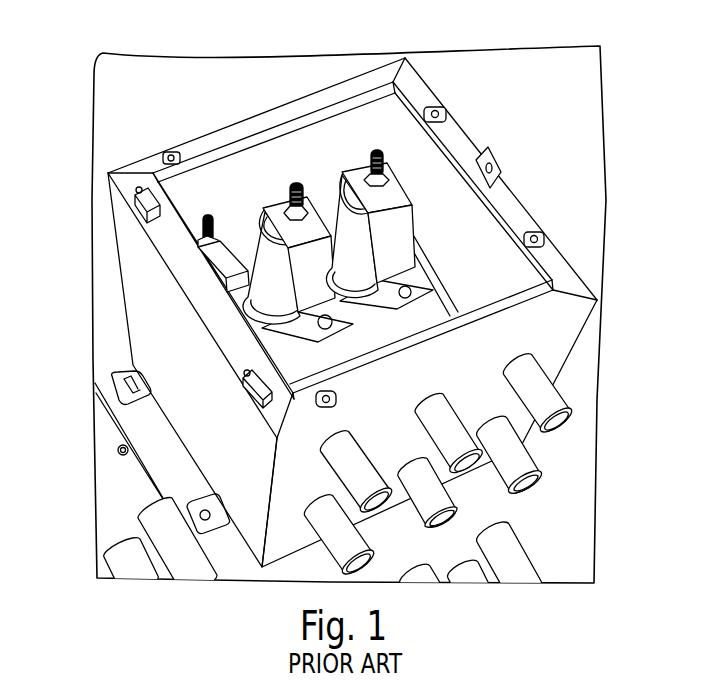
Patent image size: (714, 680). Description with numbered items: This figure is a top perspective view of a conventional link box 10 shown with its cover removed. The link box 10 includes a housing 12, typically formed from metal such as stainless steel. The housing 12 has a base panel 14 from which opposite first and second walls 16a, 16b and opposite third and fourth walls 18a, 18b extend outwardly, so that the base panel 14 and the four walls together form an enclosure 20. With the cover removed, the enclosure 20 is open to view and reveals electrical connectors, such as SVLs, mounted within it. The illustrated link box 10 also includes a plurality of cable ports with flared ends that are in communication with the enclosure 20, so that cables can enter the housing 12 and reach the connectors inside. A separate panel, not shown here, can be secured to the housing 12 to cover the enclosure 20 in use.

The link box 10 is at (343, 315).
The housing 12 is at (336, 84).
The base panel 14 is at (278, 340).
The first wall 16a is at (288, 516).
The second wall 16b is at (190, 141).
The third wall 18a is at (147, 313).
The fourth wall 18b is at (563, 262).
The enclosure 20 is at (478, 267).